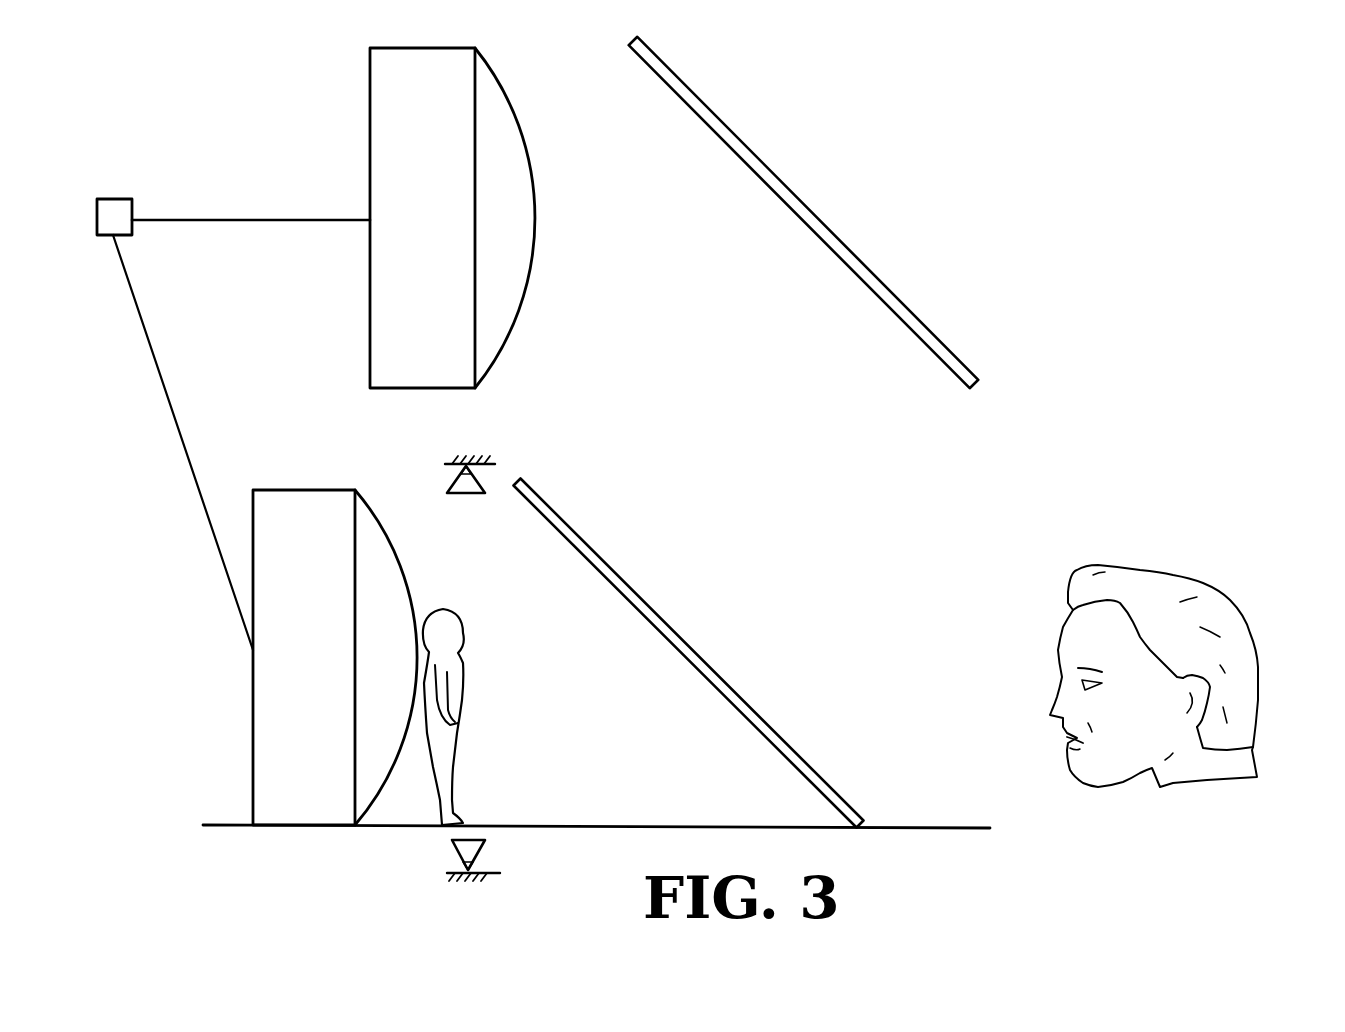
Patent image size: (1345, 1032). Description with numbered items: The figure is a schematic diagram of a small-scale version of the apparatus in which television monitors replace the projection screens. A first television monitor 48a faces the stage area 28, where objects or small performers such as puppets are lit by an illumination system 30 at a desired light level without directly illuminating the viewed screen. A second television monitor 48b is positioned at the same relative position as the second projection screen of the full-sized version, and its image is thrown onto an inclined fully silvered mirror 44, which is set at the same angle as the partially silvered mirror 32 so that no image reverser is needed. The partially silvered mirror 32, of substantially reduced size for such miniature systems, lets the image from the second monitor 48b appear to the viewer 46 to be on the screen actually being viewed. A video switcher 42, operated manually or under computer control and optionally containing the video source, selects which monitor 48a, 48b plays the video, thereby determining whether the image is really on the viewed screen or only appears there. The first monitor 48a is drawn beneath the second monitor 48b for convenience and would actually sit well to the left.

The stage area 28 is at (424, 806).
The illumination system 30 is at (448, 478).
The partially silvered mirror 32 is at (586, 542).
The video switcher 42 is at (118, 199).
The fully silvered mirror 44 is at (735, 140).
The viewer 46 is at (1235, 620).
The first television monitor 48a is at (298, 490).
The second television monitor 48b is at (370, 122).